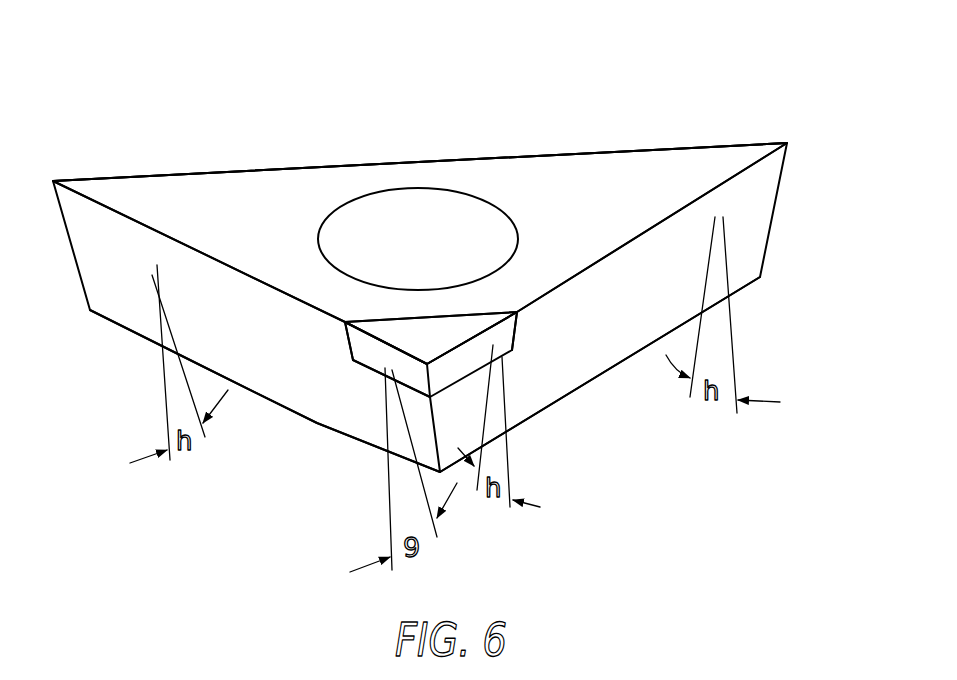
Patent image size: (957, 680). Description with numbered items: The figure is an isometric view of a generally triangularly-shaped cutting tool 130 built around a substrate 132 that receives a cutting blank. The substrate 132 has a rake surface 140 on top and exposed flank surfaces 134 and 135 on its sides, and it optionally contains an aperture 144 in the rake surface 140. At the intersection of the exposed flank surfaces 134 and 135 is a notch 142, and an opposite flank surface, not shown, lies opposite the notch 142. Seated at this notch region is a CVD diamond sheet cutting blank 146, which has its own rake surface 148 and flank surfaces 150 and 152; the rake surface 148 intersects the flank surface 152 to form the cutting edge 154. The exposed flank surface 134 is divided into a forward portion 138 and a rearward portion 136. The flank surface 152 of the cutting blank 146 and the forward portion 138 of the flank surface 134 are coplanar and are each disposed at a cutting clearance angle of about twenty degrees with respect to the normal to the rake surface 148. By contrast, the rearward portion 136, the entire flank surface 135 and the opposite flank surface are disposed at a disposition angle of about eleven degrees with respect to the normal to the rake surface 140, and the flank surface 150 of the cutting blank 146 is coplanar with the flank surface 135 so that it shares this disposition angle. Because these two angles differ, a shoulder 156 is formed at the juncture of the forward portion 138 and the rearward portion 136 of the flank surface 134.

The cutting tool 130 is at (596, 96).
The substrate 132 is at (715, 157).
The exposed flank surface 134 is at (97, 255).
The exposed flank surface 135 is at (748, 237).
The rearward portion 136 is at (128, 317).
The forward portion 138 is at (457, 443).
The rake surface 140 is at (270, 190).
The notch 142 is at (385, 325).
The aperture 144 is at (382, 213).
The CVD diamond sheet cutting blank 146 is at (443, 323).
The rake surface 148 is at (485, 312).
The flank surface 150 is at (500, 340).
The flank surface 152 is at (360, 343).
The cutting edge 154 is at (385, 370).
The shoulder 156 is at (375, 420).